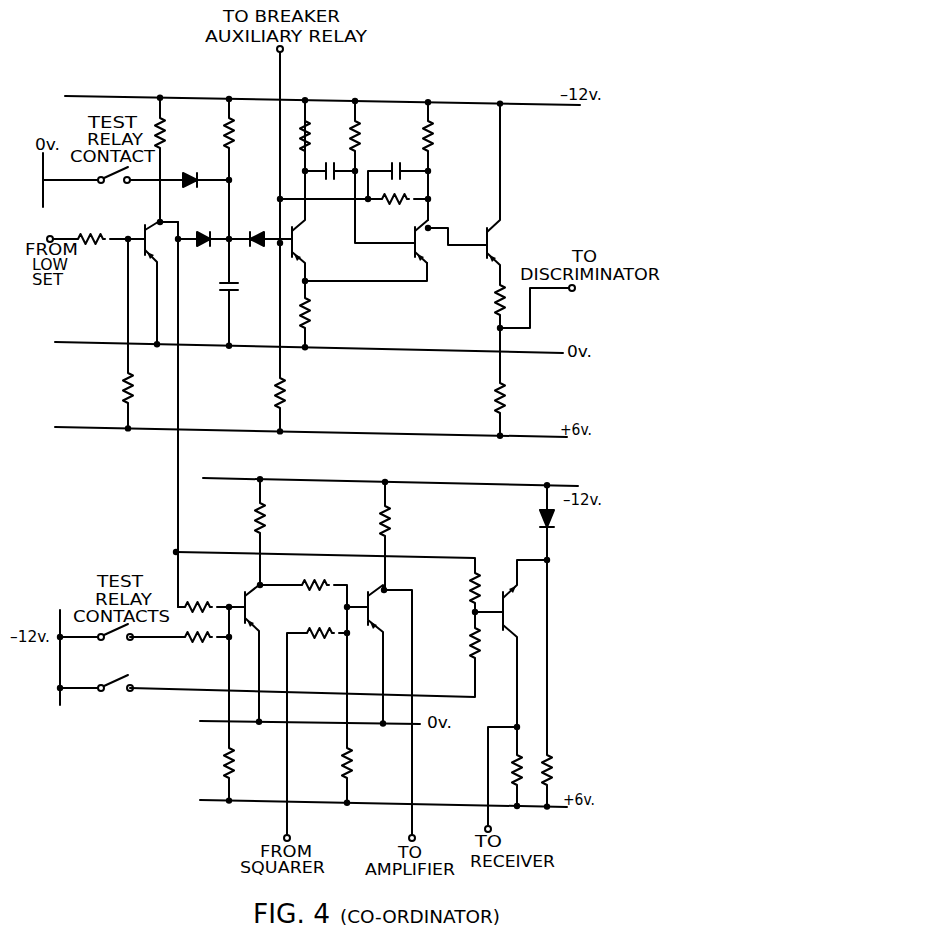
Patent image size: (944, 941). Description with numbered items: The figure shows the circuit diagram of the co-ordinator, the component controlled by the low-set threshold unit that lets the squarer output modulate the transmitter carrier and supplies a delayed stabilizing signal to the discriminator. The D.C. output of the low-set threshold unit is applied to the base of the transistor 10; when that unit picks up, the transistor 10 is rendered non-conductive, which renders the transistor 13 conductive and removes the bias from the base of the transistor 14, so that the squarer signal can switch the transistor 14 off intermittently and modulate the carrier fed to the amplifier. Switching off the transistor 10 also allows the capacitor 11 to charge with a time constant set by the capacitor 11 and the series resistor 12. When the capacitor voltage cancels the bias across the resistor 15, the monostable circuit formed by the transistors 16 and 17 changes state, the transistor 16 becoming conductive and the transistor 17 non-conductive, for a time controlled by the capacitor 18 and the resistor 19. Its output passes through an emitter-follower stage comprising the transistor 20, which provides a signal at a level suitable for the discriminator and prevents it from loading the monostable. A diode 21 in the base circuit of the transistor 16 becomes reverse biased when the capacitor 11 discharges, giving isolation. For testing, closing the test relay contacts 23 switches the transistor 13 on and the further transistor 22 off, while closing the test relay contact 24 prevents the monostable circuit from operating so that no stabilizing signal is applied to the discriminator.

The transistor 10 is at (170, 251).
The capacitor 11 is at (232, 289).
The resistor 12 is at (233, 140).
The transistor 13 is at (269, 616).
The transistor 14 is at (394, 616).
The resistor 15 is at (308, 325).
The transistor 16 is at (314, 251).
The transistor 17 is at (438, 254).
The capacitor 18 is at (326, 166).
The resistor 19 is at (358, 146).
The transistor 20 is at (517, 254).
The diode 21 is at (262, 233).
The transistor 22 is at (532, 624).
The test relay contacts 23 is at (116, 633).
The test relay contact 24 is at (115, 176).